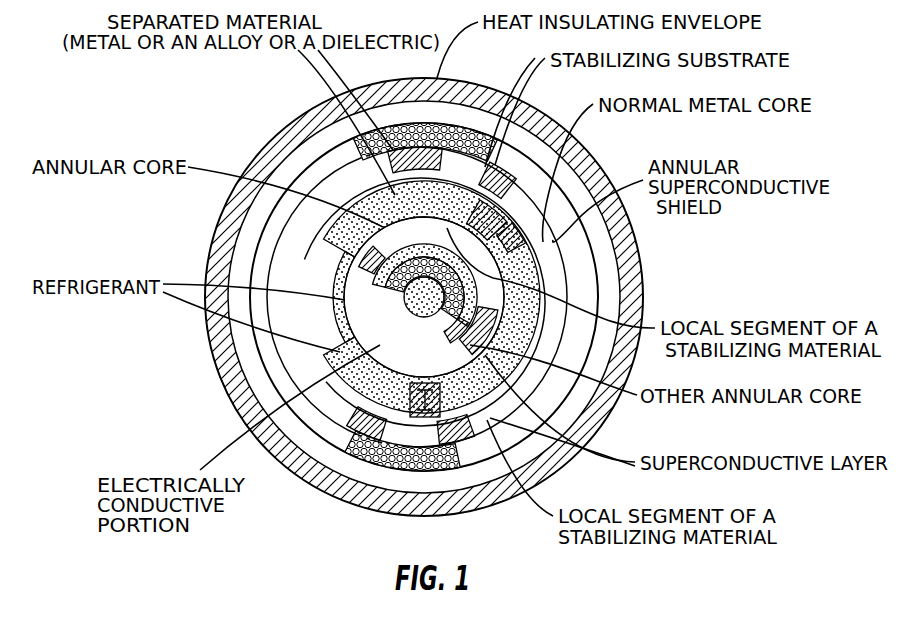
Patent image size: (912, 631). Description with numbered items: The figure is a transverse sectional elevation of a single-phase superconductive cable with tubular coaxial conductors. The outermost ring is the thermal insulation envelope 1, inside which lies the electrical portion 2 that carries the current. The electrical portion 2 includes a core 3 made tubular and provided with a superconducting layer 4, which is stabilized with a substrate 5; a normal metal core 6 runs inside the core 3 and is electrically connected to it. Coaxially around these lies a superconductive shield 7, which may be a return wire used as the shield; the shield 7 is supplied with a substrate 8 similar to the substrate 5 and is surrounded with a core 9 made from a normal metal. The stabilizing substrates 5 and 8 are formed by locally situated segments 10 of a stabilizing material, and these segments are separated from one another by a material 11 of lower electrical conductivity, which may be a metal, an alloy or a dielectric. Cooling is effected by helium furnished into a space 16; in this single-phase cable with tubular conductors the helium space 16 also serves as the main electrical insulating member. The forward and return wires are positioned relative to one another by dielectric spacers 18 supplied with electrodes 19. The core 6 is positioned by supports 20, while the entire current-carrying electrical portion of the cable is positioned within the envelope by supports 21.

The thermal insulation envelope 1 is at (271, 140).
The electrical portion 2 is at (357, 326).
The core 3 is at (383, 236).
The superconducting layer 4 is at (522, 328).
The substrate 5 is at (533, 273).
The normal metal core 6 is at (520, 293).
The superconductive shield 7 is at (577, 280).
The substrate 8 is at (487, 170).
The core 9 is at (643, 280).
The segments 10 is at (467, 350).
The material 11 is at (517, 193).
The space 16 is at (360, 203).
The dielectric spacers 18 is at (421, 384).
The electrodes 19 is at (447, 437).
The supports 20 is at (353, 247).
The supports 21 is at (419, 520).